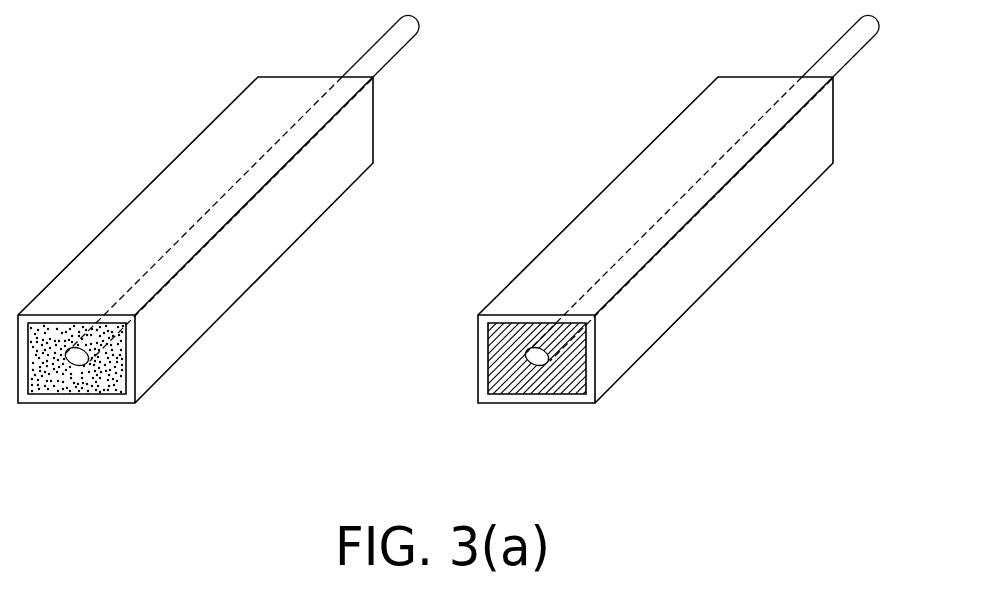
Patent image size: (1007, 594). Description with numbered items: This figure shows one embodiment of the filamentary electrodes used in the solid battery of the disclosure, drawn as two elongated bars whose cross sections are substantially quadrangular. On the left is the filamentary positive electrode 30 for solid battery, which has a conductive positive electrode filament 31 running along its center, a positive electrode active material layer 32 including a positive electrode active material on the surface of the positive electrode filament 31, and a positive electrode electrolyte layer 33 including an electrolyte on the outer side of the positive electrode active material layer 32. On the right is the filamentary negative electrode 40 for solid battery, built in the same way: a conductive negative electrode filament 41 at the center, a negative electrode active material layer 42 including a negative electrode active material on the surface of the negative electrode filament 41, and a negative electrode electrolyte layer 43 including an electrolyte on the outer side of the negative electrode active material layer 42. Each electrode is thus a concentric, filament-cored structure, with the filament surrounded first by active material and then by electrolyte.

The filamentary positive electrode for solid battery 30 is at (148, 81).
The positive electrode filament 31 is at (82, 365).
The positive electrode active material layer 32 is at (100, 362).
The positive electrode electrolyte layer 33 is at (288, 225).
The filamentary negative electrode for solid battery 40 is at (648, 242).
The negative electrode filament 41 is at (536, 396).
The negative electrode active material layer 42 is at (677, 257).
The negative electrode electrolyte layer 43 is at (659, 240).